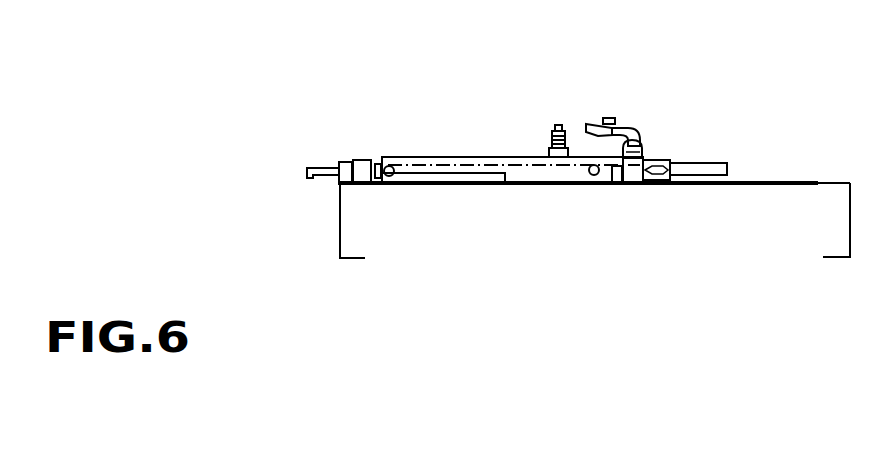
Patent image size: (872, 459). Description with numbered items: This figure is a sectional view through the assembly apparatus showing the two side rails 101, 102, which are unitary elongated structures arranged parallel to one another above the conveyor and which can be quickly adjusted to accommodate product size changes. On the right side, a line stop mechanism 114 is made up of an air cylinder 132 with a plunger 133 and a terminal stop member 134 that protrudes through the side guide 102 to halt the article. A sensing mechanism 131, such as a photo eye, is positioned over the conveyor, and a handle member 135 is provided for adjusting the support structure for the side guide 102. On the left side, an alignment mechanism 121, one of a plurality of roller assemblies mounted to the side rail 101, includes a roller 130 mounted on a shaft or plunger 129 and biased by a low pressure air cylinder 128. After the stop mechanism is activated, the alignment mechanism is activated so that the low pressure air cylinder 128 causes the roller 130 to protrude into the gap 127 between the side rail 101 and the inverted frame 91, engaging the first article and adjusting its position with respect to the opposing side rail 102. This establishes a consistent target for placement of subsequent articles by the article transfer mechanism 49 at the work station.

The alignment mechanism 121 is at (290, 143).
The gap 127 is at (373, 140).
The inverted frame 91 is at (402, 168).
The article transfer mechanism 49 is at (530, 121).
The handle member 135 is at (587, 123).
The sensing mechanism 131 is at (625, 127).
The line stop mechanism 114 is at (672, 131).
The air cylinder 132 is at (707, 168).
The plunger 133 is at (660, 184).
The low pressure air cylinder 128 is at (317, 177).
The shaft or plunger 129 is at (350, 172).
The roller 130 is at (358, 183).
The side rail 101 is at (372, 183).
The terminal stop member 134 is at (615, 183).
The side rail 102 is at (630, 183).